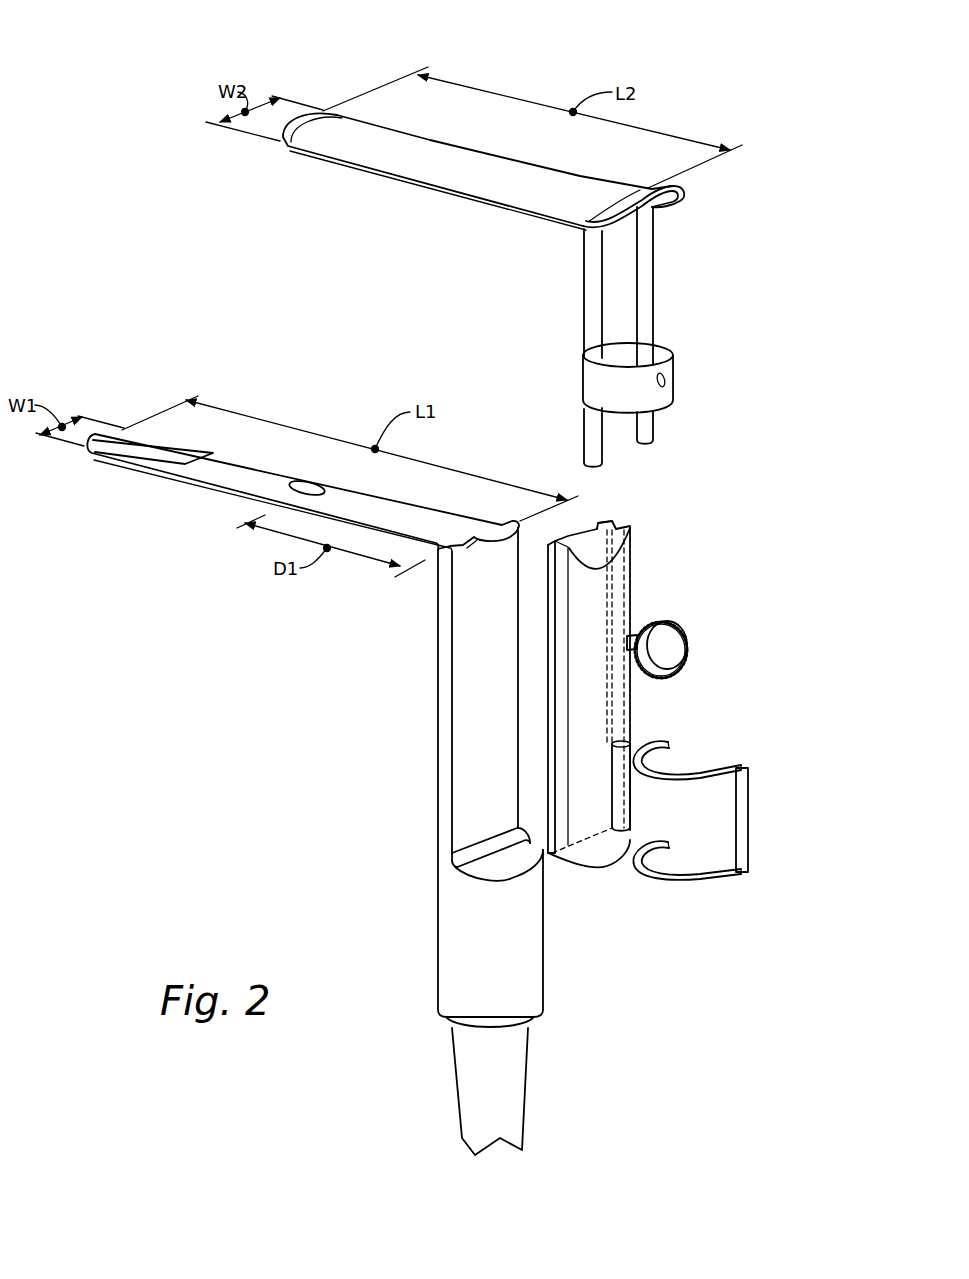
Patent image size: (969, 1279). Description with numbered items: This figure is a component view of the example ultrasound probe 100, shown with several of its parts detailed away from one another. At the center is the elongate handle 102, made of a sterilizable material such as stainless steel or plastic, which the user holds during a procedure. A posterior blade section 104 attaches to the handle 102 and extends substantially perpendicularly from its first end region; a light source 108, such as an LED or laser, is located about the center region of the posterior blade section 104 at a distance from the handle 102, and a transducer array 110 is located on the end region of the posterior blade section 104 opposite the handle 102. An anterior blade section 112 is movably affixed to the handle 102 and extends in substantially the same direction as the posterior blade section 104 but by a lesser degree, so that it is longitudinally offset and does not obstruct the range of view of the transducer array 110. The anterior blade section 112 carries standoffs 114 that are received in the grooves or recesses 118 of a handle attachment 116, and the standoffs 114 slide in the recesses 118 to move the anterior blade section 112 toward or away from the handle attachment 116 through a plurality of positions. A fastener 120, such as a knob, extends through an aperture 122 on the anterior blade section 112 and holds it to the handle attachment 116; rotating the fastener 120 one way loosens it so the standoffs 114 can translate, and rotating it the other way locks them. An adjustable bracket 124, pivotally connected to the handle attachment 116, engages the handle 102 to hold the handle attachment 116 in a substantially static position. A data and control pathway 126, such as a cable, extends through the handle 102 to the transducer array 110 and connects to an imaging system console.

The ultrasound probe 100 is at (142, 74).
The elongate handle 102 is at (527, 933).
The posterior blade section 104 is at (287, 494).
The light source 108 is at (309, 486).
The transducer array 110 is at (150, 442).
The anterior blade section 112 is at (356, 148).
The standoffs 114 is at (655, 280).
The handle attachment 116 is at (647, 673).
The grooves or recesses 118 is at (617, 528).
The fastener 120 is at (663, 650).
The aperture 122 is at (673, 380).
The adjustable bracket 124 is at (703, 772).
The data and control pathway 126 is at (507, 1070).